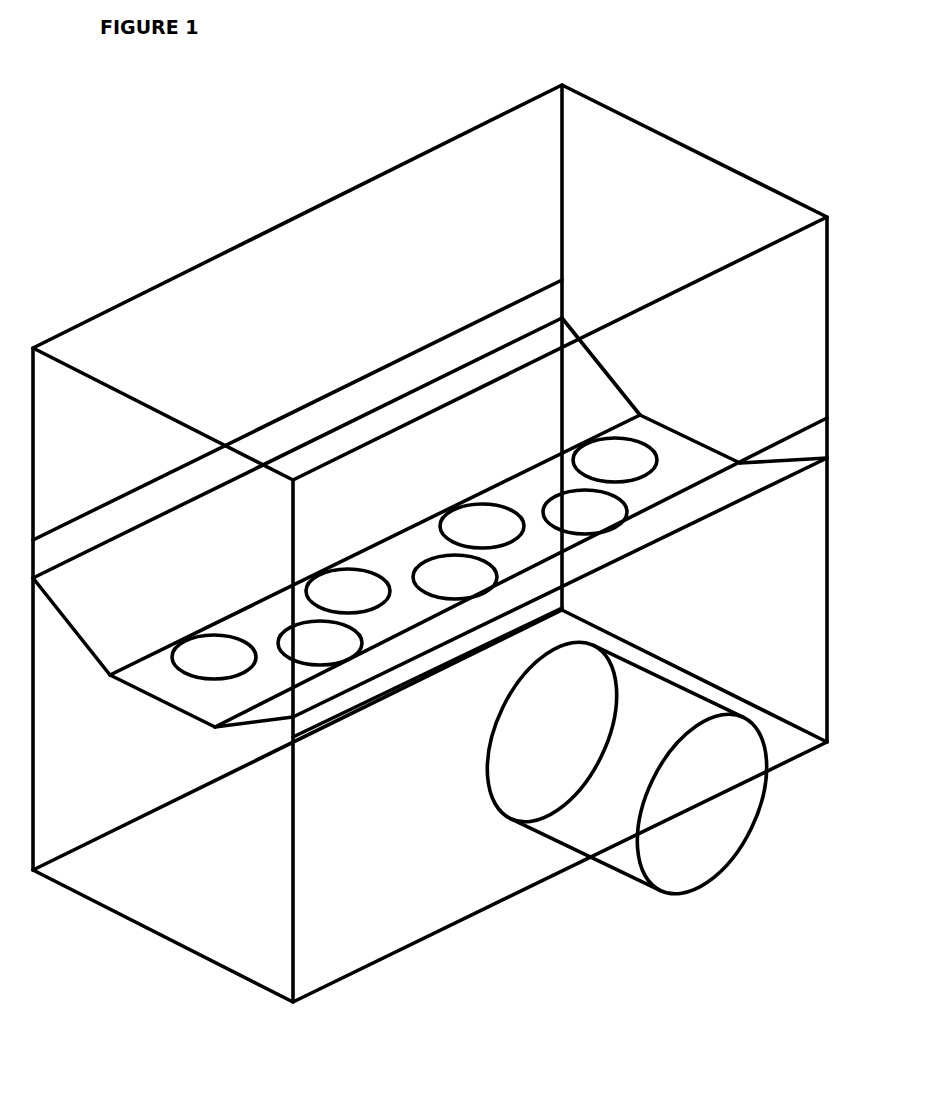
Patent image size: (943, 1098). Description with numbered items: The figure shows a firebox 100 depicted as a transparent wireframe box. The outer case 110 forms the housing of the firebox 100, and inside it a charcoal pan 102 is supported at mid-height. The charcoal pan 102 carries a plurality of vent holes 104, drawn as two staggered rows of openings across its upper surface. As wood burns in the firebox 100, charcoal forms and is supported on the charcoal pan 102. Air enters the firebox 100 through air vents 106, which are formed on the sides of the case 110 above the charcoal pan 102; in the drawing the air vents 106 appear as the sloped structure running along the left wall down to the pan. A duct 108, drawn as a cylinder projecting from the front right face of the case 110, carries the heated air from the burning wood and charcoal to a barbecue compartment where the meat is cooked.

The firebox 100 is at (158, 113).
The charcoal pan 102 is at (468, 576).
The vent holes 104 is at (414, 558).
The air vents 106 is at (336, 477).
The duct 108 is at (627, 768).
The case 110 is at (430, 543).